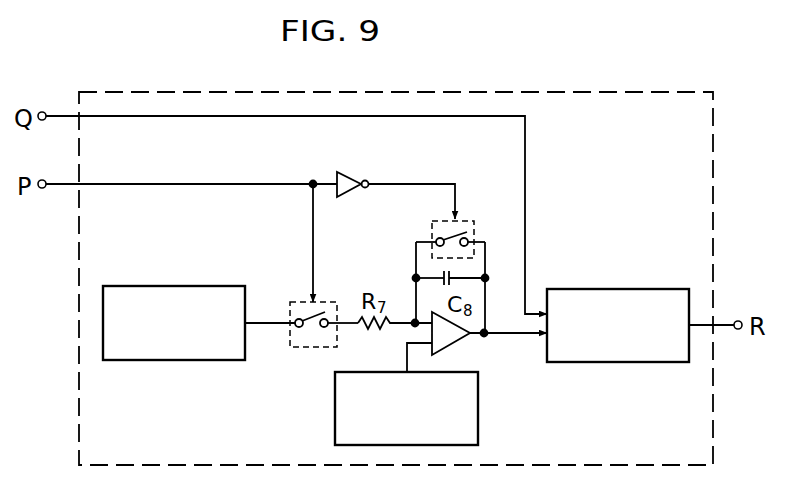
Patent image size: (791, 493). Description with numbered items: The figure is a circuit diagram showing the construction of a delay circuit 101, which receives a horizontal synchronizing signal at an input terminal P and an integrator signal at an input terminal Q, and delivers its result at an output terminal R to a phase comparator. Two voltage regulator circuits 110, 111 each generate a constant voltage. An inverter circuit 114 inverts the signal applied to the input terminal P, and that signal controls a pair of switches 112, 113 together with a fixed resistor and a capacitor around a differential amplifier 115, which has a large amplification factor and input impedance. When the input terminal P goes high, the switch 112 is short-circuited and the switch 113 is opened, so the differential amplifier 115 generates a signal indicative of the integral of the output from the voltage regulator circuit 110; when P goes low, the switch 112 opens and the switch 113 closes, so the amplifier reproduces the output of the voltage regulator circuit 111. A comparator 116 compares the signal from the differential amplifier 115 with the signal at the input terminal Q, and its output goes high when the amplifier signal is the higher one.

The delay circuit 101 is at (715, 148).
The voltage regulator circuit 110 is at (176, 361).
The voltage regulator circuit 111 is at (478, 412).
The switch 112 is at (312, 348).
The switch 113 is at (461, 219).
The inverter circuit 114 is at (348, 156).
The differential amplifier 115 is at (457, 342).
The comparator 116 is at (629, 289).